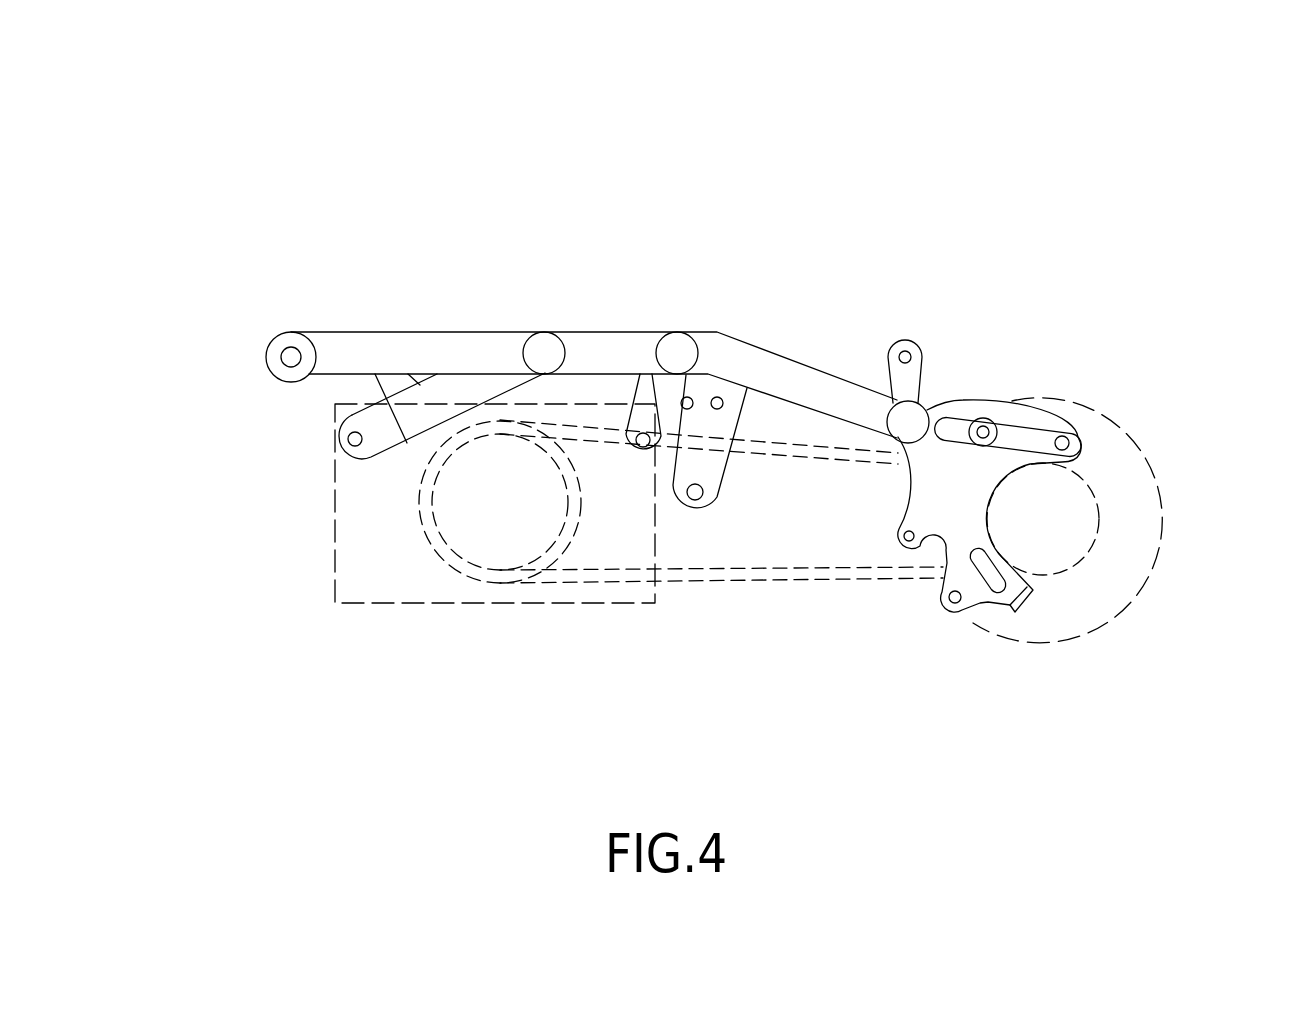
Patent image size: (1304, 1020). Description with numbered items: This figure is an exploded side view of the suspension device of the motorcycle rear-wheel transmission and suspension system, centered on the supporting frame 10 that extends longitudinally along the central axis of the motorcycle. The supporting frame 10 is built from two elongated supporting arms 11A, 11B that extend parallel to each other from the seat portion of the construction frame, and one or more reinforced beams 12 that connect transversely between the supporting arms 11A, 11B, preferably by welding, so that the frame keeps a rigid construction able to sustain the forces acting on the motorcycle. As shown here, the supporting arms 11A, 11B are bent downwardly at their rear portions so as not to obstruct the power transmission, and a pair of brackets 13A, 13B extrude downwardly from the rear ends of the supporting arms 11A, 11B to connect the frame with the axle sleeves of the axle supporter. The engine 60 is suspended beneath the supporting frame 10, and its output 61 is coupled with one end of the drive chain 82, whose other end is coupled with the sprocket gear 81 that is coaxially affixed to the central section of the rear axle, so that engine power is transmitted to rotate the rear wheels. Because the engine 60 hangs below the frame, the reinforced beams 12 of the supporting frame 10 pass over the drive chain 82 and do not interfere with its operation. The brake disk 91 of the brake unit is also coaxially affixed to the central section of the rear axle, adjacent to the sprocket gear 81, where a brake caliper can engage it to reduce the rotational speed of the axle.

The supporting frame 10 is at (437, 340).
The supporting arm 11A is at (358, 348).
The supporting arm 11B is at (544, 331).
The reinforced beam 12 is at (552, 345).
The bracket 13A is at (952, 493).
The bracket 13B is at (1018, 446).
The engine 60 is at (380, 578).
The output 61 is at (512, 522).
The sprocket gear 81 is at (1048, 545).
The drive chain 82 is at (812, 575).
The brake disk 91 is at (1133, 553).